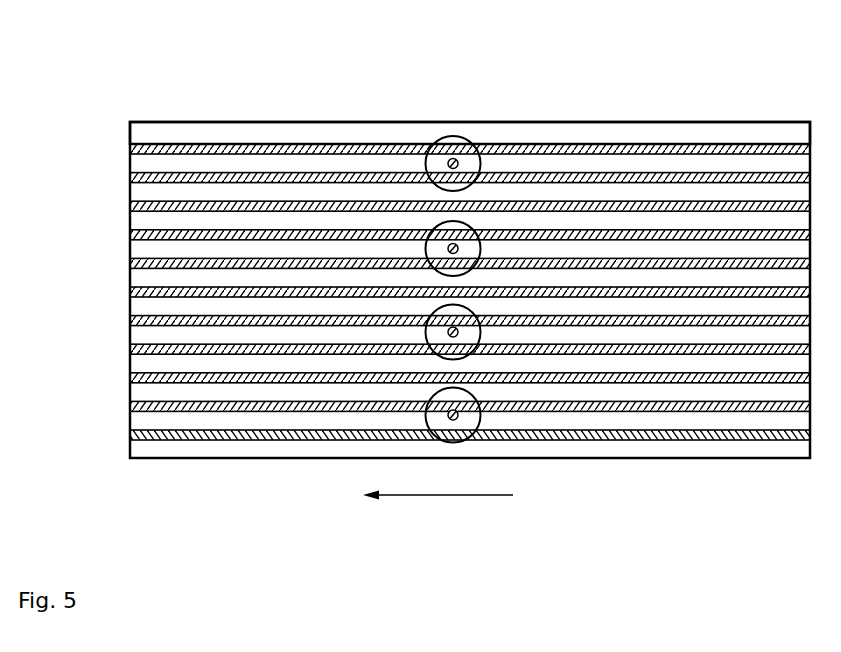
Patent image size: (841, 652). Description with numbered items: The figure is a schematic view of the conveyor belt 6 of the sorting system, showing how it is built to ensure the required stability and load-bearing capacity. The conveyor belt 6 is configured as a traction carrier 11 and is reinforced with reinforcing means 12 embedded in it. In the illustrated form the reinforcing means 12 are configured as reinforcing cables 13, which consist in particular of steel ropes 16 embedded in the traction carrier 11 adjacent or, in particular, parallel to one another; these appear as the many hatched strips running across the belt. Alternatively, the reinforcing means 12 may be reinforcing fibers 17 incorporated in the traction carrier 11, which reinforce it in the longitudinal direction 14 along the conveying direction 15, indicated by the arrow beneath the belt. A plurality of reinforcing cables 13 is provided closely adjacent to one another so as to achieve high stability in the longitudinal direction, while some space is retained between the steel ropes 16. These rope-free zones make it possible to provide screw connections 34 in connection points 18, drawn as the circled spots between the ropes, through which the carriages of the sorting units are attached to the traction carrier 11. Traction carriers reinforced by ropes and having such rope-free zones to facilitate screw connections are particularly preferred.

The conveyor belt 6 is at (182, 128).
The traction carrier 11 is at (237, 128).
The reinforcing means 12 is at (563, 145).
The reinforcing cables 13 is at (640, 145).
The longitudinal direction 14 is at (438, 528).
The conveying direction 15 is at (427, 502).
The steel ropes 16 is at (470, 232).
The reinforcing fibers 17 is at (663, 438).
The connection points 18 is at (470, 132).
The screw connections 34 is at (435, 137).